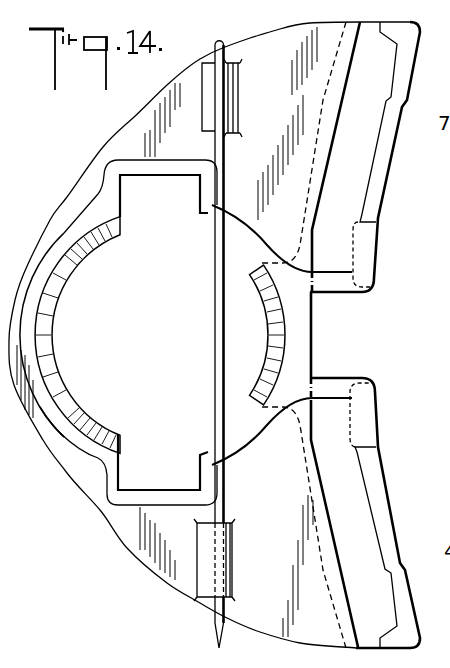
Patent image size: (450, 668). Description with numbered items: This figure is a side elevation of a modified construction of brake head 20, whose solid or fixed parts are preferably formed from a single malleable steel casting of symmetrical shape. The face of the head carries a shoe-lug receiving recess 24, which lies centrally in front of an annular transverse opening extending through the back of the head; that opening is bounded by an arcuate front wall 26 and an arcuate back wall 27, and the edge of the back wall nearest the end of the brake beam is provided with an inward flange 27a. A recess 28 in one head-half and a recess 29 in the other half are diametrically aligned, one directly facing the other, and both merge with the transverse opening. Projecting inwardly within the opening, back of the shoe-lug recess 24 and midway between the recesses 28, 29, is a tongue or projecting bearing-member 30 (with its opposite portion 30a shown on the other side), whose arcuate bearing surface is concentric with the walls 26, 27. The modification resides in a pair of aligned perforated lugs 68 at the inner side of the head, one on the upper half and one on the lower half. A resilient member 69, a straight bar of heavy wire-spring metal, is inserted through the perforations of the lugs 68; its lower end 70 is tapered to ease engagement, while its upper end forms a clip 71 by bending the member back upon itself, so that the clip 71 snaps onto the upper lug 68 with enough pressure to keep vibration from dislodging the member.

The head 20 is at (125, 551).
The shoe-lug receiving recess 24 is at (338, 332).
The arcuate front wall 26 is at (252, 441).
The arcuate back wall 27 is at (47, 247).
The inward flange 27a is at (76, 420).
The recess 28 is at (118, 184).
The recess 29 is at (117, 475).
The tongue or projecting bearing-member 30 is at (278, 318).
The bearing ring portion 30a is at (46, 348).
The perforated lugs 68 is at (235, 88).
The resilient member 69 is at (214, 280).
The lower end 70 is at (210, 630).
The clip 71 is at (217, 112).